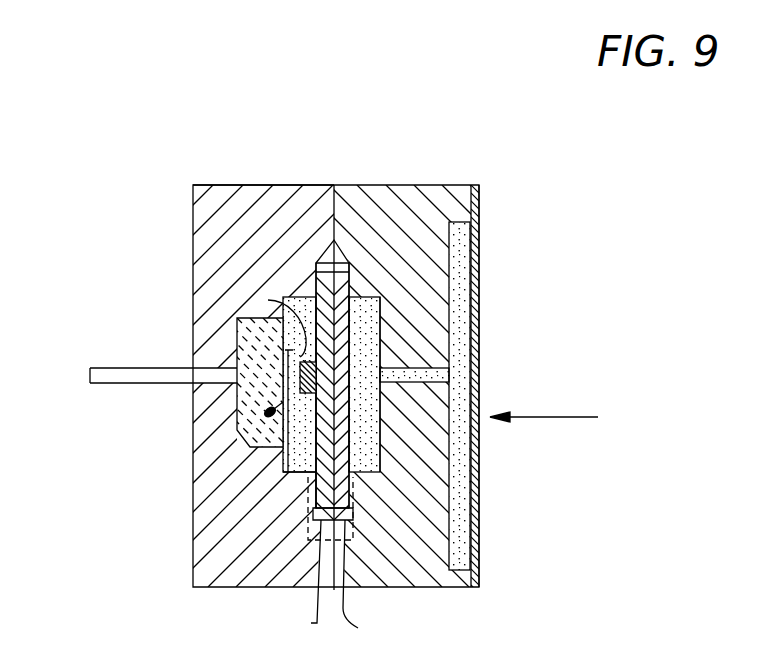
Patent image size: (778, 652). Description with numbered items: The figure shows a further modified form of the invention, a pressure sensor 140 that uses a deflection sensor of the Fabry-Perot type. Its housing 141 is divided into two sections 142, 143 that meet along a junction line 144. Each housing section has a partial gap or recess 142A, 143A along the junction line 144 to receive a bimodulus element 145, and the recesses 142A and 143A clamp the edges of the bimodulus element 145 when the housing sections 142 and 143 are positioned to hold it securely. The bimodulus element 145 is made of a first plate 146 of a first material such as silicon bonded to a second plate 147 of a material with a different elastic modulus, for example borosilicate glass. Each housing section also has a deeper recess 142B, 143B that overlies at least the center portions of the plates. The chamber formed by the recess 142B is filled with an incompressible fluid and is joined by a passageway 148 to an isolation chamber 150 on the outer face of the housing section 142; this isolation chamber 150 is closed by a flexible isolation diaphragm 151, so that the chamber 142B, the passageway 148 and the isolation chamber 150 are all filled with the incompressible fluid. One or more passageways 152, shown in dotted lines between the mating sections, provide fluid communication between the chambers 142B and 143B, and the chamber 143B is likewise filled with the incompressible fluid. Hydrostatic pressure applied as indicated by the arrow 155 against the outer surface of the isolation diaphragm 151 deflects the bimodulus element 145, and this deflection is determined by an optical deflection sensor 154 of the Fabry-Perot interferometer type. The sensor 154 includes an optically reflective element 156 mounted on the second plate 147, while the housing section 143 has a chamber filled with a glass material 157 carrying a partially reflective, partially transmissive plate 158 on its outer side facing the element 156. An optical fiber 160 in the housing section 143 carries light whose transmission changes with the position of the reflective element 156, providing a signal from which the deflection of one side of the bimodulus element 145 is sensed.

The pressure sensor 140 is at (432, 128).
The housing 141 is at (281, 186).
The housing section 142 is at (446, 186).
The partial gap (recess) 142A is at (350, 264).
The deeper recess (chamber) 142B is at (380, 342).
The housing section 143 is at (209, 196).
The partial gap (recess) 143A is at (317, 264).
The deeper recess (chamber) 143B is at (305, 447).
The junction line 144 is at (347, 186).
The bimodulus element 145 is at (360, 406).
The first plate 146 is at (350, 287).
The second plate 147 is at (316, 285).
The passageway 148 is at (420, 370).
The isolation chamber 150 is at (471, 262).
The isolation diaphragm 151 is at (478, 548).
The passageway 152 is at (397, 570).
The optical deflection sensor 154 is at (290, 457).
The arrow 155 is at (560, 417).
The optically reflective element 156 is at (268, 300).
The glass material 157 is at (240, 398).
The partially reflective, partially transmissive plate 158 is at (288, 350).
The optical fiber 160 is at (95, 384).